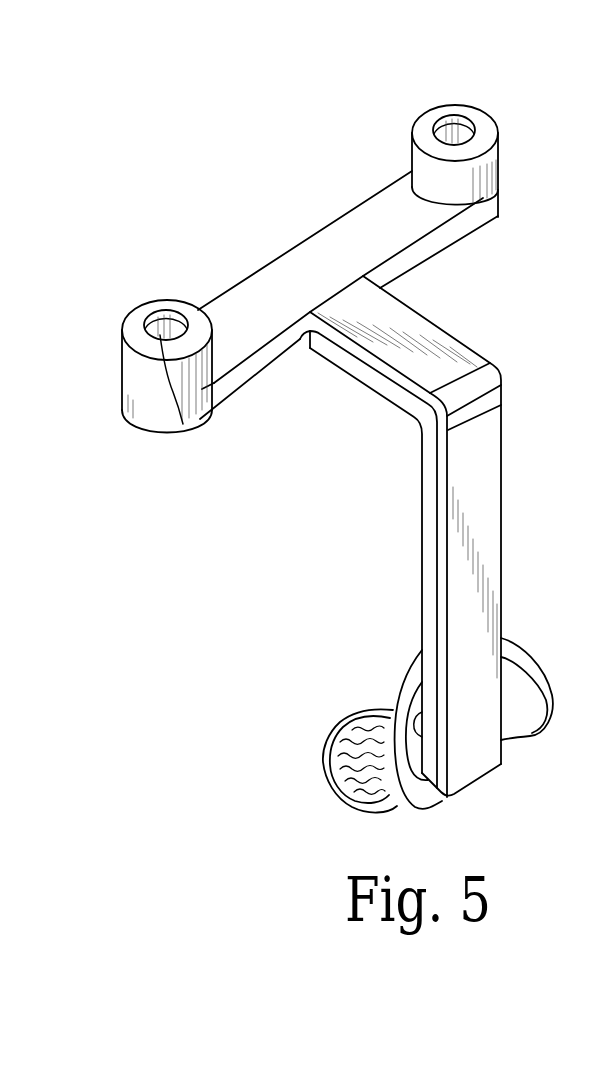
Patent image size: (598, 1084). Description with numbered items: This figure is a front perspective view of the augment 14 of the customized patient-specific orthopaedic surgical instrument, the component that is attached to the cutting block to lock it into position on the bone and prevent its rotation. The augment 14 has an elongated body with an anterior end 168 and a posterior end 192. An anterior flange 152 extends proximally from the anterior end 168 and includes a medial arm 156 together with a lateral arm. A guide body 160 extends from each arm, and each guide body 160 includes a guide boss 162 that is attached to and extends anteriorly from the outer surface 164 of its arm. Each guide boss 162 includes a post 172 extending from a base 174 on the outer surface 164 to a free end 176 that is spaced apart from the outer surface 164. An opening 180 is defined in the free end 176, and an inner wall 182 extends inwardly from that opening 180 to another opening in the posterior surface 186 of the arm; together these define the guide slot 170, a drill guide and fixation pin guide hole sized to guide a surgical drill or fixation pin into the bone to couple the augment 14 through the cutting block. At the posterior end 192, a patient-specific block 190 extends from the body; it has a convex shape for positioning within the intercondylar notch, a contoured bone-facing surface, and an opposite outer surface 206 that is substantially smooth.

The augment 14 is at (234, 146).
The anterior flange 152 is at (330, 228).
The medial arm 156 is at (242, 386).
The guide body 160 is at (493, 128).
The guide boss 162 is at (494, 171).
The outer surface 164 is at (280, 258).
The anterior end 168 is at (492, 374).
The guide slot 170 is at (444, 104).
The post 172 is at (496, 197).
The base 174 is at (484, 226).
The free end 176 is at (498, 111).
The opening 180 is at (447, 152).
The inner wall 182 is at (472, 107).
The posterior surface 186 is at (291, 358).
The patient-specific block 190 is at (330, 746).
The posterior end 192 is at (483, 721).
The outer surface 206 is at (402, 804).